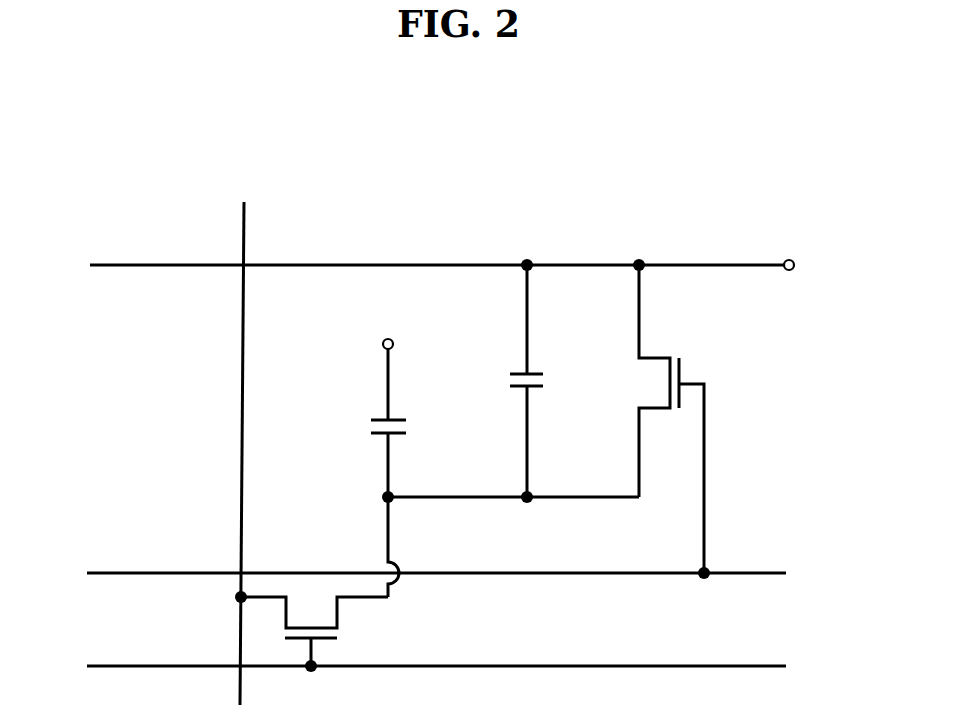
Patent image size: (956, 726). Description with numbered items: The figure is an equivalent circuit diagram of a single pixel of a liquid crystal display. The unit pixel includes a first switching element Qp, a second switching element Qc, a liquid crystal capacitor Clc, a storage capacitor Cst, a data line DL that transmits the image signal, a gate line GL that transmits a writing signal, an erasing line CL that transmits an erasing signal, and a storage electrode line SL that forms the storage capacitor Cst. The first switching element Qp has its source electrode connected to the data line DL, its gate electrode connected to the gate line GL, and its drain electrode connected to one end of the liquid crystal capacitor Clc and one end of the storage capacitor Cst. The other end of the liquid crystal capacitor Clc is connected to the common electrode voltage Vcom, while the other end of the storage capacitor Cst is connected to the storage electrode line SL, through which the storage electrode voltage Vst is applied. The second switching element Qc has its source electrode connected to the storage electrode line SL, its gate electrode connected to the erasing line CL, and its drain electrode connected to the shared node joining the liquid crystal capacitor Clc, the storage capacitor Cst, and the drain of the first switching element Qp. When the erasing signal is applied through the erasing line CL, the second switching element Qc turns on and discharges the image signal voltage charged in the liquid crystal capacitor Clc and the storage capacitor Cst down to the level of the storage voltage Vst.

The storage electrode line SL is at (421, 263).
The data line DL is at (243, 439).
The erasing line CL is at (419, 571).
The gate line GL is at (419, 665).
The storage electrode voltage Vst is at (811, 267).
The common electrode voltage Vcom is at (386, 363).
The liquid crystal capacitor Clc is at (361, 455).
The storage capacitor Cst is at (501, 381).
The second switching element Qc is at (671, 419).
The first switching element Qp is at (314, 631).